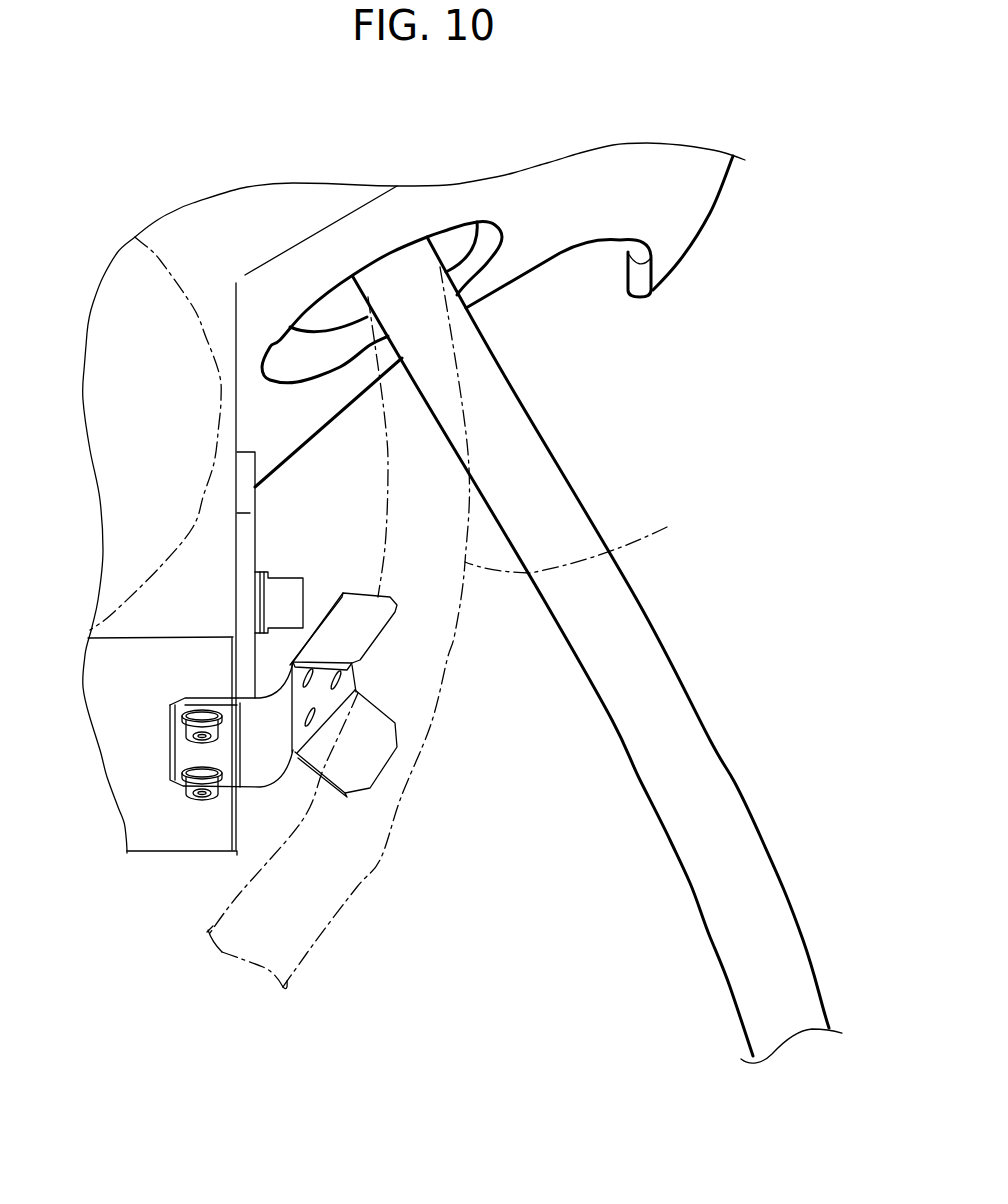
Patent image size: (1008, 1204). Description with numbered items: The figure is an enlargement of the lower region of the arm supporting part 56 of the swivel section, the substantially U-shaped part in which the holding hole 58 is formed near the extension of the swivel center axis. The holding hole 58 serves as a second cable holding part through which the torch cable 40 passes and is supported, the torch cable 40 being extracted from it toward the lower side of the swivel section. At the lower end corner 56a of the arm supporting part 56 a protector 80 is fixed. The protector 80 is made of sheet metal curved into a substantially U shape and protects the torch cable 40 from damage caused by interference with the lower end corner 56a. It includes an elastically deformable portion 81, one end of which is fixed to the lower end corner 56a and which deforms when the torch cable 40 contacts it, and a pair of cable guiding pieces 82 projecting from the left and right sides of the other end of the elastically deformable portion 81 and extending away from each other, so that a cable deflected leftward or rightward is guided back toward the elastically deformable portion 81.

The torch cable 40 is at (565, 505).
The arm supporting part 56 is at (553, 243).
The lower end corner 56a is at (203, 838).
The holding hole 58 is at (337, 320).
The protector 80 is at (352, 742).
The elastically deformable portion 81 is at (270, 767).
The cable guiding pieces 82 is at (355, 640).